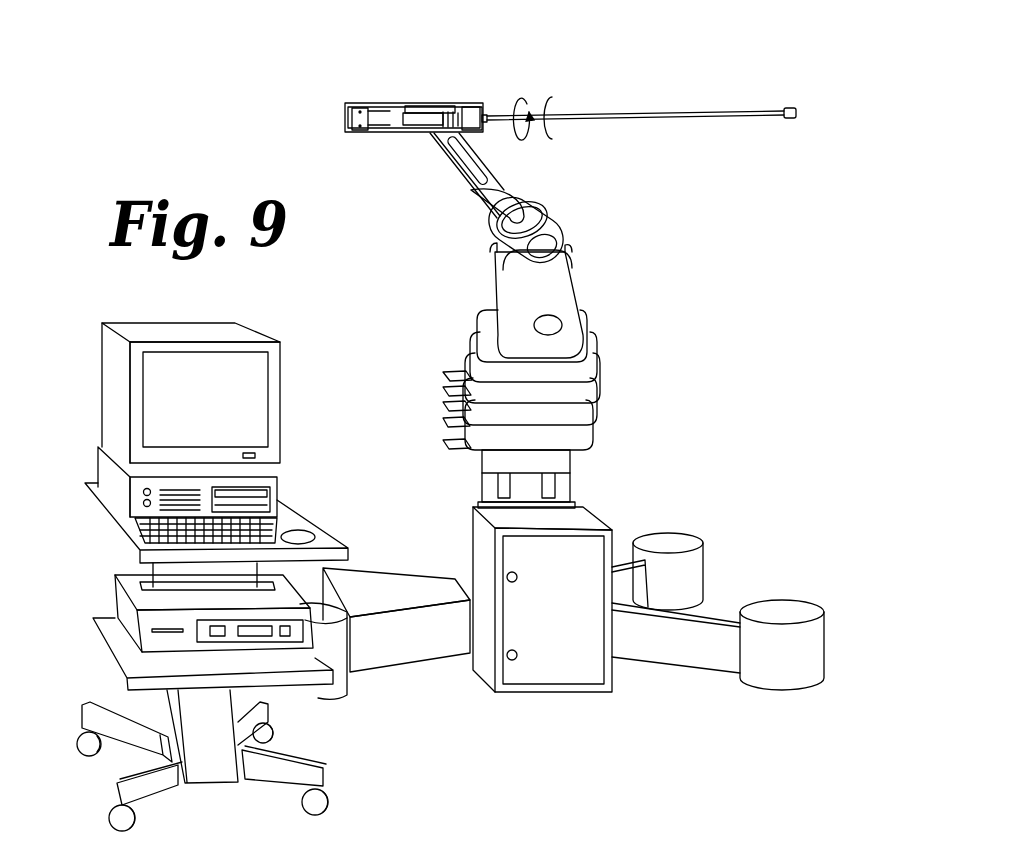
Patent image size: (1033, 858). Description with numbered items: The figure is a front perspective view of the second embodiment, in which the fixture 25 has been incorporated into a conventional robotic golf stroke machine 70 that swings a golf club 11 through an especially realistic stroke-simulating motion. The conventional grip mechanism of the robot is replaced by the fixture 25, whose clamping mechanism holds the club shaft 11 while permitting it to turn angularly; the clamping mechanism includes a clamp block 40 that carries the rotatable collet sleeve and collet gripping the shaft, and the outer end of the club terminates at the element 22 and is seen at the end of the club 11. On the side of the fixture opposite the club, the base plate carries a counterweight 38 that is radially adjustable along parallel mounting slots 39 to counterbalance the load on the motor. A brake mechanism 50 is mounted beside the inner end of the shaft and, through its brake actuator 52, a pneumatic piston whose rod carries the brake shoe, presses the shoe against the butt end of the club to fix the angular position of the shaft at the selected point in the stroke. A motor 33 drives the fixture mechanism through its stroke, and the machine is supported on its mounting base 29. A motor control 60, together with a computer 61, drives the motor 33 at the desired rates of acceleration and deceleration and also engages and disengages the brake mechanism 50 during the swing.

The golf club shaft 11 is at (661, 105).
The probe tip 22 is at (794, 119).
The fixture 25 is at (333, 211).
The support base 29 is at (576, 486).
The motor 33 is at (586, 304).
The counterweight 38 is at (353, 118).
The mounting slots 39 is at (378, 131).
The clamp block 40 is at (473, 111).
The brake mechanism 50 is at (413, 101).
The brake actuator 52 is at (416, 127).
The motor control 60 is at (553, 651).
The computer 61 is at (120, 408).
The robotic golf stroke machine 70 is at (640, 349).